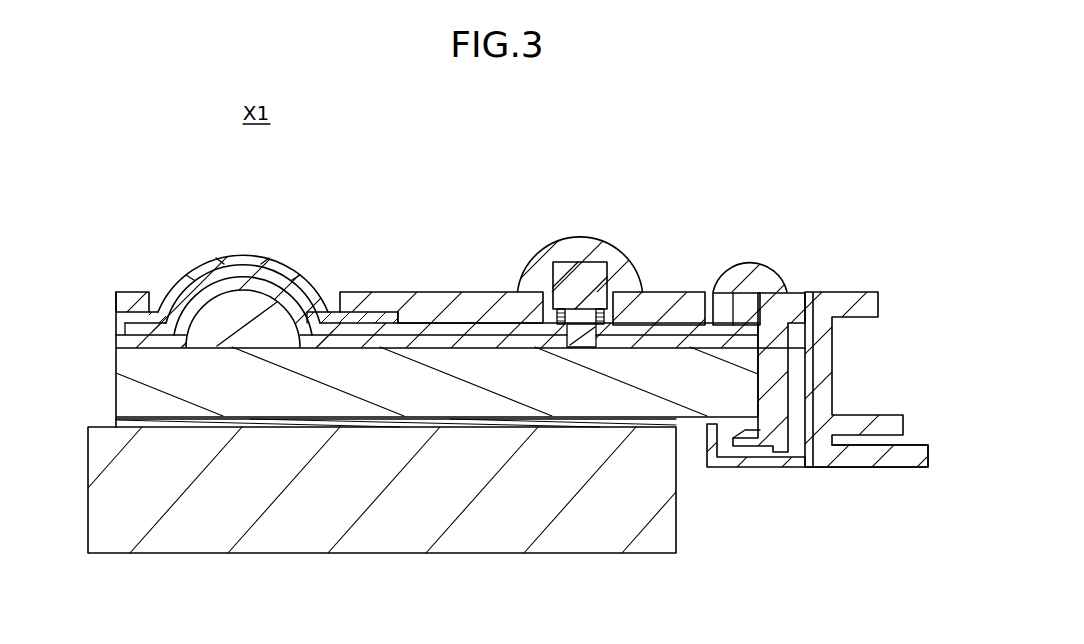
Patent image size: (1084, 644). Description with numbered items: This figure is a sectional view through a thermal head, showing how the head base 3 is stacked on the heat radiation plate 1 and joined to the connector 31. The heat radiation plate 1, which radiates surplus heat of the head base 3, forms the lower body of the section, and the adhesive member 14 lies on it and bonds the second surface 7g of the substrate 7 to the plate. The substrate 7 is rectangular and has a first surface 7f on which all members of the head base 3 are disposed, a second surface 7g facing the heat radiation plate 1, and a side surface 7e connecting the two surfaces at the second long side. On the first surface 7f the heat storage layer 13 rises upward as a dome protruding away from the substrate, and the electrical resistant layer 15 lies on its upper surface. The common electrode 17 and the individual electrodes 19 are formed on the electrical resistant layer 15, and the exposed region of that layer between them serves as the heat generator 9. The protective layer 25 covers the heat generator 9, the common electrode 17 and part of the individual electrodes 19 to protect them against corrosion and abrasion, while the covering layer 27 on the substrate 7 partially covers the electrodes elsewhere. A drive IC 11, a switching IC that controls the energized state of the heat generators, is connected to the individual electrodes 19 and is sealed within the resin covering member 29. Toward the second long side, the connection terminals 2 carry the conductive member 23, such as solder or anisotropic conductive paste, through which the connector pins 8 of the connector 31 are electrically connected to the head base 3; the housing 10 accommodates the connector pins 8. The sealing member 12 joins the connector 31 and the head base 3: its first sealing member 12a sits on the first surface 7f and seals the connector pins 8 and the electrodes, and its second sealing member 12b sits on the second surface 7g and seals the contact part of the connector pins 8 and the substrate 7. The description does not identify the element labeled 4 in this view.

The heat radiation plate 1 is at (392, 513).
The connection terminals 2 is at (725, 332).
The head base 3 is at (542, 322).
The bump electrode 4 is at (605, 322).
The substrate 7 is at (138, 393).
The side surface 7e is at (736, 446).
The first surface 7f is at (197, 350).
The second surface 7g is at (270, 350).
The connector pins 8 is at (800, 467).
The heat generator 9 is at (242, 272).
The housing 10 is at (893, 467).
The drive integrated circuits 11 is at (572, 273).
The sealing member 12 is at (542, 322).
The first sealing member 12a is at (779, 297).
The second sealing member 12b is at (777, 395).
The heat storage layer 13 is at (222, 316).
The adhesive member 14 is at (487, 420).
The electrical resistant layer 15 is at (298, 330).
The common electrode 17 is at (137, 330).
The individual electrodes 19 is at (372, 323).
The conductive member 23 is at (722, 302).
The protective layer 25 is at (298, 262).
The covering layer 27 is at (128, 300).
The covering member 29 is at (538, 262).
The connector 31 is at (542, 322).